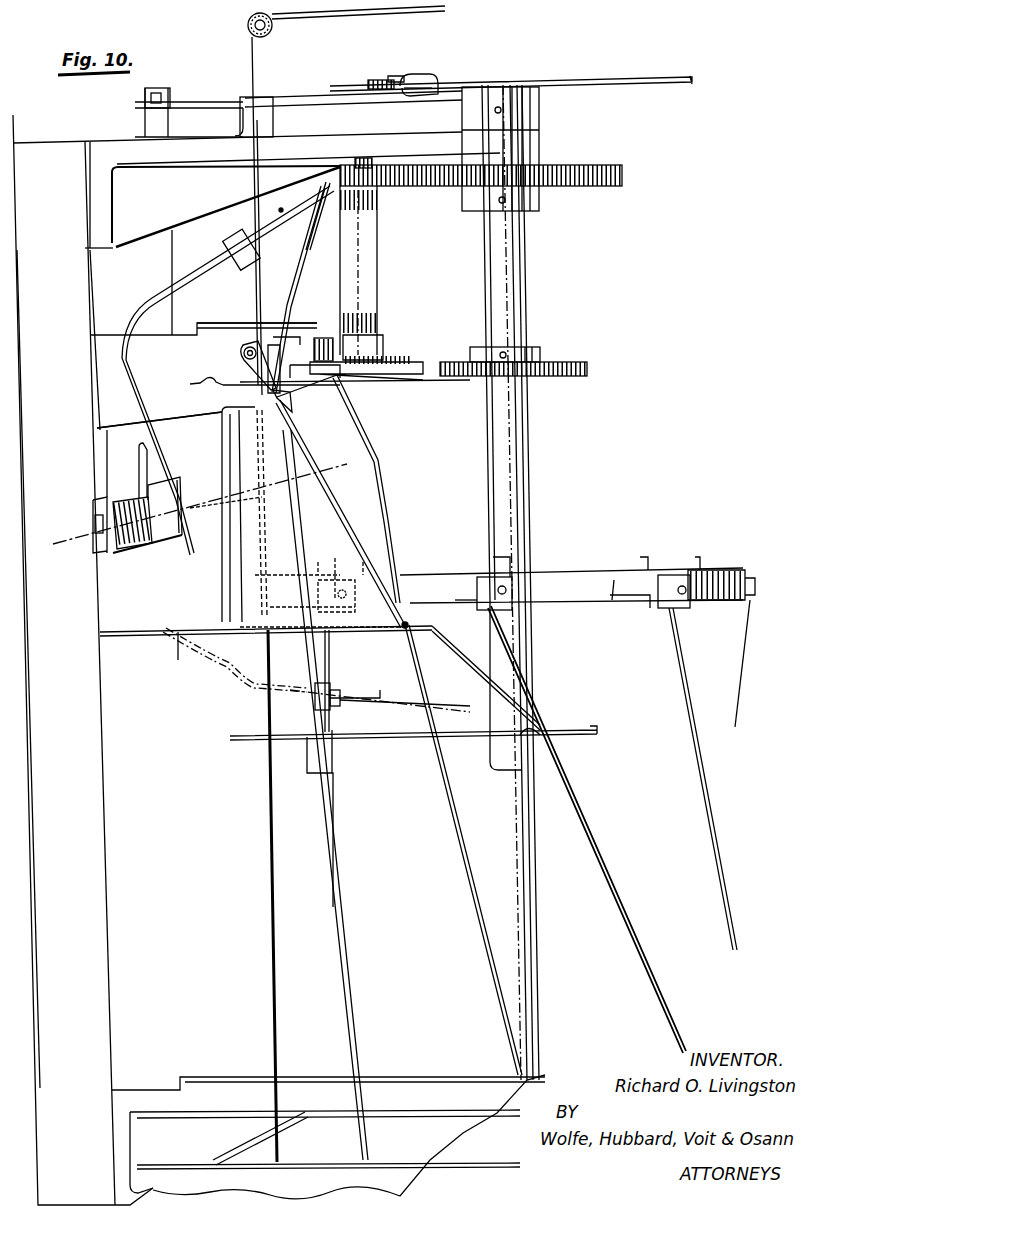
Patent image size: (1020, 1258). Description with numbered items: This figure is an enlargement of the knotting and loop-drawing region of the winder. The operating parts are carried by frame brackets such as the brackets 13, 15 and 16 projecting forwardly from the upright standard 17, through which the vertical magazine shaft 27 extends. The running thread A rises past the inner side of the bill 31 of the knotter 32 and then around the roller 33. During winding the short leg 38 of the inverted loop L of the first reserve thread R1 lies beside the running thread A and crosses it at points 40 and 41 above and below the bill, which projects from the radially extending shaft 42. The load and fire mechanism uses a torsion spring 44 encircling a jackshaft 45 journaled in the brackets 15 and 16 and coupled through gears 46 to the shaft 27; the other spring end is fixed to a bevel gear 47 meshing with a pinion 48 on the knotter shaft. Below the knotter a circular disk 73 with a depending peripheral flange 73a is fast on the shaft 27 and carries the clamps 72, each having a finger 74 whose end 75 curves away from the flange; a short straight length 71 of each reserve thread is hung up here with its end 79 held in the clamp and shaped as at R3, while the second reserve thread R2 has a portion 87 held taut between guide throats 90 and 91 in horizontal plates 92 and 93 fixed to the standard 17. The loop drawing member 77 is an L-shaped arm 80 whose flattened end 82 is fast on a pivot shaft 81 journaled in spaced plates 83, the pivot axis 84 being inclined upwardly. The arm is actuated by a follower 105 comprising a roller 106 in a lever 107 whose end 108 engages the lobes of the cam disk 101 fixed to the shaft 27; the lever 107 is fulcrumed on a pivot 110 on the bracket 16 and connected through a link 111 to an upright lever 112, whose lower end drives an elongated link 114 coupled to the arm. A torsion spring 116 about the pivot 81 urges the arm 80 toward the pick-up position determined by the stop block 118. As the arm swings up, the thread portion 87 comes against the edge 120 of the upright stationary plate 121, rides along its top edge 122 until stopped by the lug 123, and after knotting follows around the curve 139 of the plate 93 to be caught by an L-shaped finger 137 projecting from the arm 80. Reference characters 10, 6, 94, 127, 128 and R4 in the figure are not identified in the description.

The base 10 is at (257, 1166).
The bracket 13 is at (167, 1092).
The bracket 15 is at (172, 365).
The bracket 16 is at (152, 157).
The upright standard 17 is at (78, 780).
The vertical shaft 27 is at (512, 480).
The bill 31 is at (238, 356).
The knotter 32 is at (247, 345).
The roller 33 is at (282, 32).
The short leg of the inverted loop 38 is at (296, 242).
The crossing point 40 is at (255, 330).
The crossing point 41 is at (240, 378).
The knotter shaft 42 is at (310, 300).
The torsion spring 44 is at (384, 322).
The jackshaft 45 is at (364, 160).
The gears 46 is at (352, 192).
The bevel gear 47 is at (386, 360).
The pinion 48 is at (325, 330).
The axis 6 is at (348, 456).
The length of reserve thread 71 is at (578, 792).
The supporting clamp 72 is at (360, 560).
The circular disk 73 is at (593, 550).
The depending peripheral flange 73a is at (613, 600).
The finger 74 is at (518, 572).
The finger end 75 is at (480, 602).
The loop drawing member 77 is at (286, 198).
The clamped thread end 79 is at (345, 578).
The arm 80 is at (135, 298).
The pivot shaft 81 is at (97, 542).
The flattened end 82 is at (170, 489).
The spaced plates 83 is at (92, 508).
The pivot axis 84 is at (329, 441).
The thread portion 87 is at (420, 664).
The upper guide throat 90 is at (405, 632).
The lower guide throat 91 is at (437, 737).
The upper guide plate 92 is at (178, 642).
The lower plate 93 is at (350, 742).
The bracket 94 is at (330, 669).
The cam disk 101 is at (582, 76).
The follower 105 is at (419, 66).
The roller 106 is at (372, 80).
The lever 107 is at (296, 104).
The lever end 108 is at (432, 78).
The pivot 110 is at (258, 97).
The link 111 is at (168, 122).
The upright lever 112 is at (170, 98).
The elongated link 114 is at (172, 242).
The torsion spring 116 is at (140, 550).
The stop block 118 is at (318, 683).
The edge 120 is at (372, 500).
The upright stationary plate 121 is at (330, 516).
The top edge 122 is at (240, 412).
The lug 123 is at (299, 390).
The arm 127 is at (230, 334).
The notch 128 is at (210, 381).
The L-shaped finger 137 is at (208, 518).
The curve 139 is at (230, 737).
The running thread A is at (268, 822).
The inverted loop L is at (303, 237).
The first reserve thread R1 is at (345, 986).
The second reserve thread R2 is at (480, 880).
The third reserve thread R3 is at (620, 876).
The cable R4 is at (706, 796).